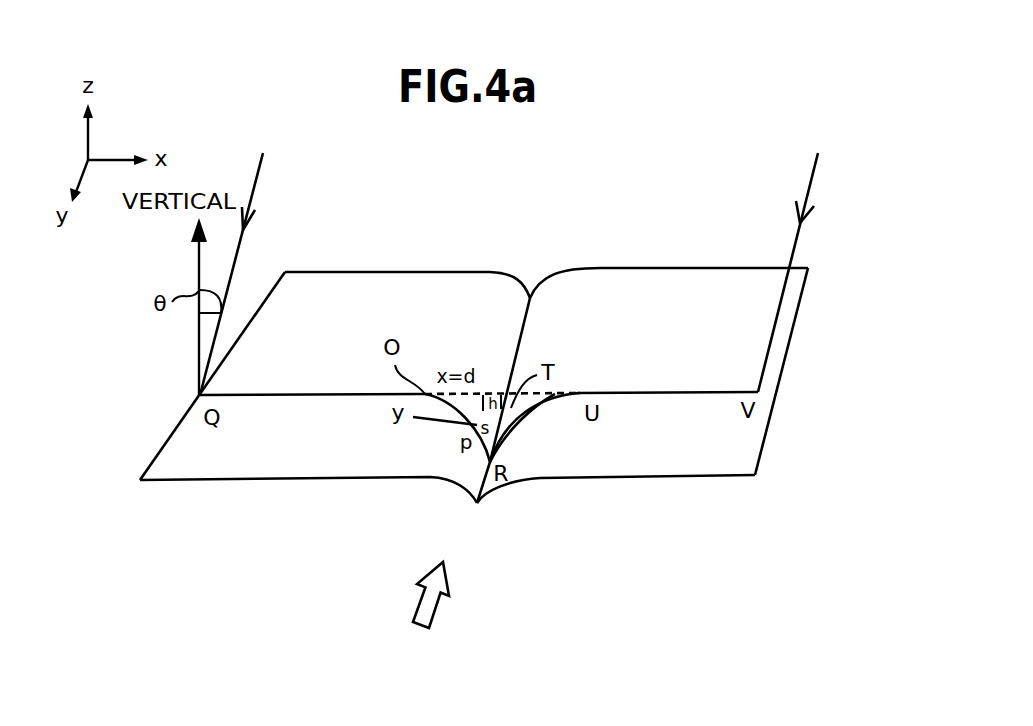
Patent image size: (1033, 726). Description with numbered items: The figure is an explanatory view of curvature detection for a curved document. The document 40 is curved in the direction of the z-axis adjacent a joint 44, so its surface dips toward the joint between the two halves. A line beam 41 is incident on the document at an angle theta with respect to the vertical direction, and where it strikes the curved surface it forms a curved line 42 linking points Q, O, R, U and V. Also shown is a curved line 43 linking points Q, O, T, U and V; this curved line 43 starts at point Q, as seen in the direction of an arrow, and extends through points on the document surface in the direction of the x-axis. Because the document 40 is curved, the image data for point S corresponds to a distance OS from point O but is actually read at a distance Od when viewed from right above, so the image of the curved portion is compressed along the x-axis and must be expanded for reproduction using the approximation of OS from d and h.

The document 40 is at (765, 438).
The line beam 41 is at (812, 175).
The curved line 42 is at (520, 420).
The curved line 43 is at (533, 402).
The joint 44 is at (477, 503).